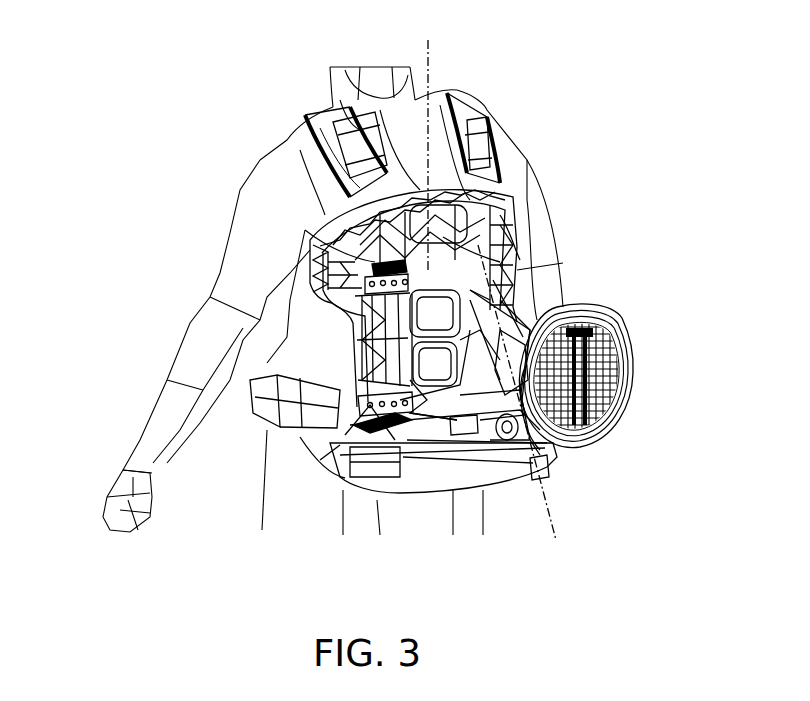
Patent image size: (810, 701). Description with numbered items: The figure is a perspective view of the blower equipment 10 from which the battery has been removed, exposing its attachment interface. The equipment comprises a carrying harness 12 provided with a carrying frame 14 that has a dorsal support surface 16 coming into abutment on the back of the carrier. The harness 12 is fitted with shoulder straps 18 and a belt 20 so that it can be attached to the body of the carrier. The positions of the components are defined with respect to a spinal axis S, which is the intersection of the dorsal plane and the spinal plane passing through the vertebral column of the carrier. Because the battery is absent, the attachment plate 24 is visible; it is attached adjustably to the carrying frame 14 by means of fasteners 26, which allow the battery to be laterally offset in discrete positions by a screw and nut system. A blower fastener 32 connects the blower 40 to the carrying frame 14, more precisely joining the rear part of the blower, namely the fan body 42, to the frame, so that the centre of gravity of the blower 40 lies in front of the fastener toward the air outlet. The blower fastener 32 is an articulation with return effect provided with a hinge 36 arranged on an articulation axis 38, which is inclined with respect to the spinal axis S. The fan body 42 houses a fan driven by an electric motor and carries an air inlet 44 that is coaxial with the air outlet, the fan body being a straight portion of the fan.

The spinal axis S is at (430, 66).
The blower equipment 10 is at (428, 330).
The carrying harness 12 is at (520, 192).
The carrying frame 14 is at (403, 473).
The dorsal support surface 16 is at (510, 243).
The shoulder straps 18 is at (482, 147).
The belt 20 is at (303, 395).
The attachment plate 24 is at (395, 279).
The fasteners 26 is at (376, 276).
The blower fastener 32 is at (380, 405).
The hinge 36 is at (510, 353).
The articulation axis 38 is at (552, 523).
The blower 40 is at (617, 376).
The fan body 42 is at (506, 383).
The air inlet 44 is at (610, 393).